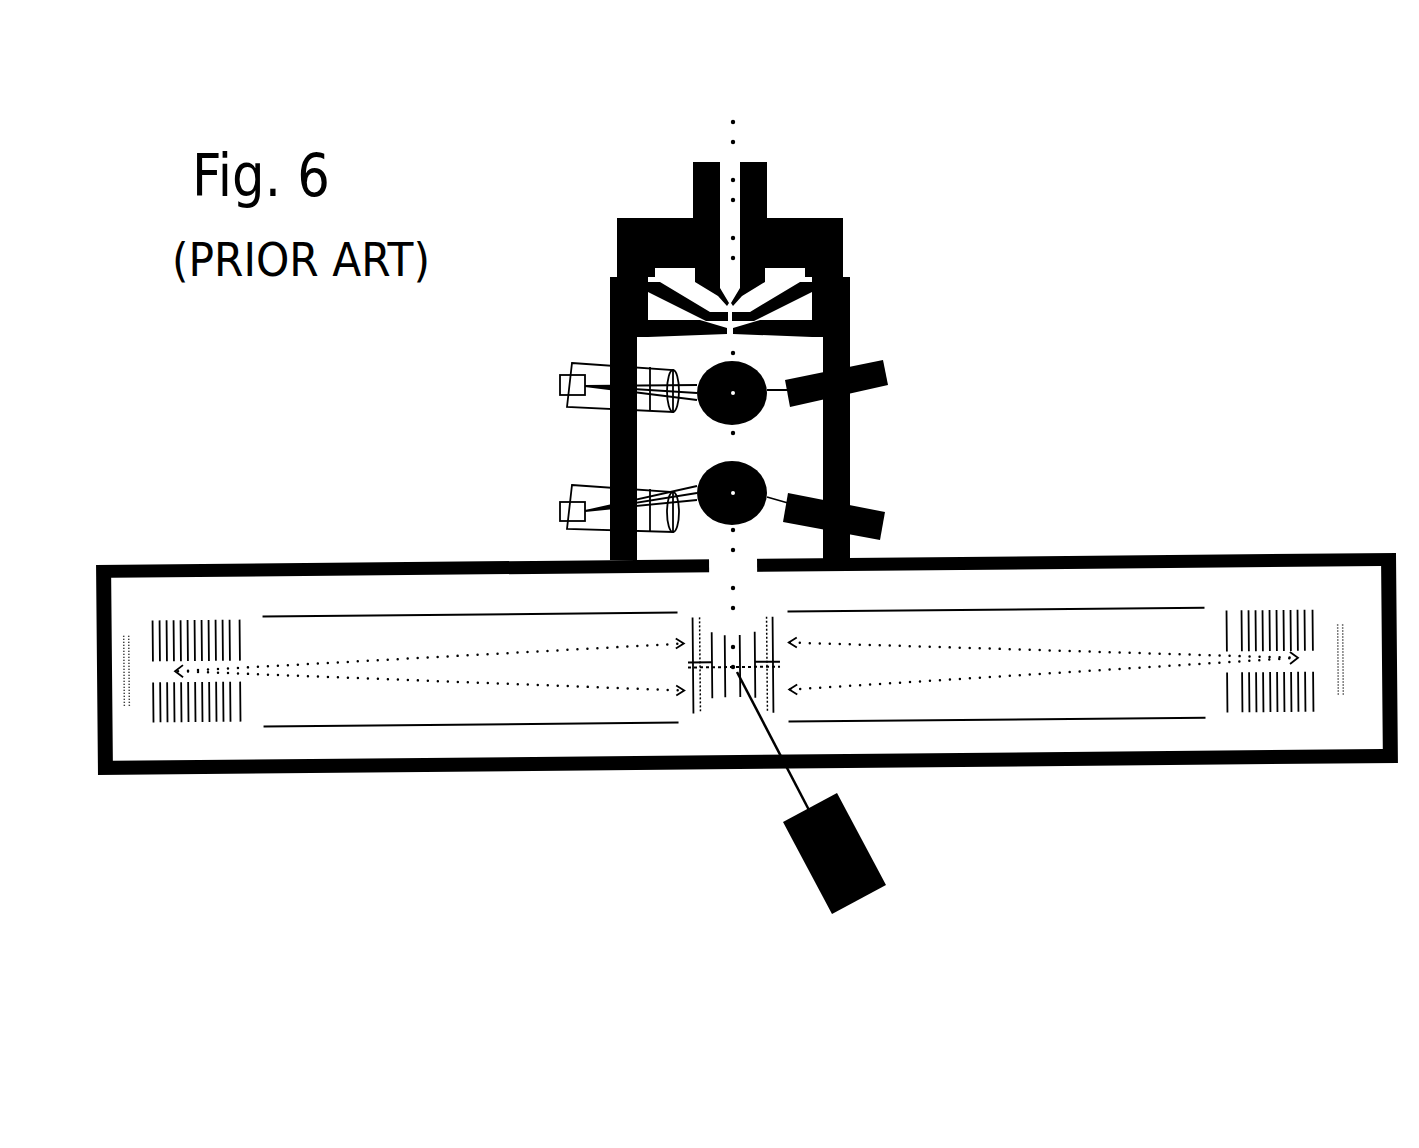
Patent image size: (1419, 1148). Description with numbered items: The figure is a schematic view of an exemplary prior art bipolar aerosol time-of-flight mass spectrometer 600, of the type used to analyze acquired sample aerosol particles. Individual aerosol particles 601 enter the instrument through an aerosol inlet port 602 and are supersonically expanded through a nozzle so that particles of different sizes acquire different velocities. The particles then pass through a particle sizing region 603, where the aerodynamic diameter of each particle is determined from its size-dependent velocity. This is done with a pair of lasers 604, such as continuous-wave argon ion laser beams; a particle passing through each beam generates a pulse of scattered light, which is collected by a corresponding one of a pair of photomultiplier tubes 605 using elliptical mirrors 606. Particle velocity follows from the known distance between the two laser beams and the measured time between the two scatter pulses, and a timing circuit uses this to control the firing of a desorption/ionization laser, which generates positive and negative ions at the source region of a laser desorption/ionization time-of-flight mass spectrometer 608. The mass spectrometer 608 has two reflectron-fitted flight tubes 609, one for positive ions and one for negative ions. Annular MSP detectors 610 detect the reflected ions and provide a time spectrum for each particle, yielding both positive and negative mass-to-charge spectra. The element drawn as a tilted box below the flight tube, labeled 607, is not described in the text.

The bipolar aerosol time-of-flight mass spectrometer 600 is at (1165, 182).
The aerosol particles 601 is at (761, 134).
The aerosol inlet port 602 is at (693, 186).
The particle sizing region 603 is at (693, 358).
The lasers 604 is at (560, 385).
The photomultiplier tubes 605 is at (908, 523).
The elliptical mirrors 606 is at (785, 366).
The detector 607 is at (868, 850).
The laser desorption/ionization time-of-flight mass spectrometer 608 is at (1052, 556).
The reflectron-fitted flight tubes 609 is at (190, 599).
The MSP detectors 610 is at (198, 740).